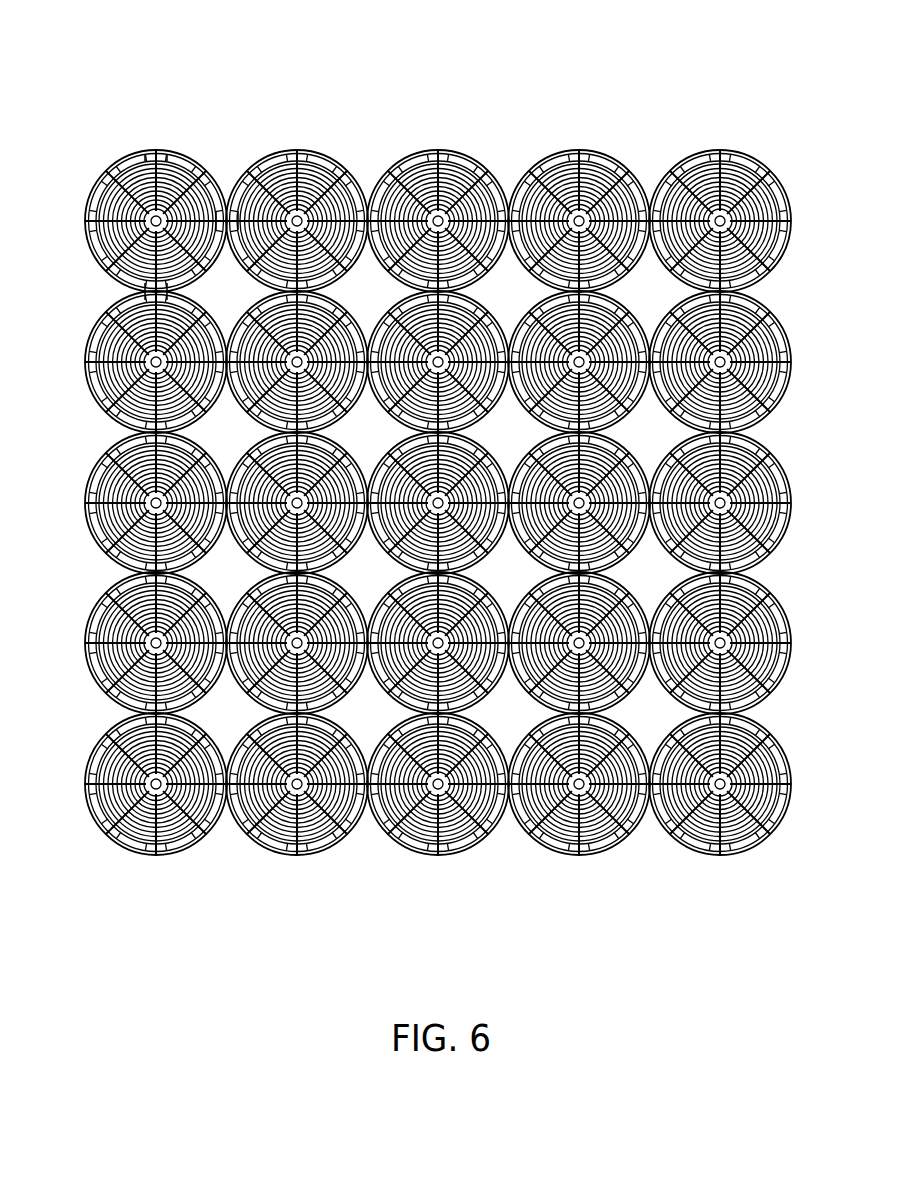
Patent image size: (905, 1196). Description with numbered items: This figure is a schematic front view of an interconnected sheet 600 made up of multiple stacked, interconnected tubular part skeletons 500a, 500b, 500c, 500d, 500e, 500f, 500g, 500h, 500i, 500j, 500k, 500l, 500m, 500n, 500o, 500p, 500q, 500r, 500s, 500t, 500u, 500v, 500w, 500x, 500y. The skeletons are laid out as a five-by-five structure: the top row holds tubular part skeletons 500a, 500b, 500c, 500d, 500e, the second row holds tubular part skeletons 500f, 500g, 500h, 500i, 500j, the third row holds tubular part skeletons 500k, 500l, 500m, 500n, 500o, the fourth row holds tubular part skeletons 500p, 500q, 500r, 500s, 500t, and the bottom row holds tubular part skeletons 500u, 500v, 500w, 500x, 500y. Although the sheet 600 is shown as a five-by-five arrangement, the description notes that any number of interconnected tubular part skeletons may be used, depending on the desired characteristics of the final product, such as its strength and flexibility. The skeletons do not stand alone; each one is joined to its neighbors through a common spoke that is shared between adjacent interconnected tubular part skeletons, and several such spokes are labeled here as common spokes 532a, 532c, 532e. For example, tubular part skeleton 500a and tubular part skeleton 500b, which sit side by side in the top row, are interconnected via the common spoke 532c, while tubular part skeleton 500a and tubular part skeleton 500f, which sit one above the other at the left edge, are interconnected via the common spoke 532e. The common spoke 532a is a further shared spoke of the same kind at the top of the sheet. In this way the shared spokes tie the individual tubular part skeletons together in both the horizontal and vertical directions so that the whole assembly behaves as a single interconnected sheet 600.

The interconnected sheet 600 is at (118, 58).
The tubular part skeleton 500a is at (108, 147).
The tubular part skeleton 500b is at (290, 142).
The tubular part skeleton 500c is at (385, 145).
The tubular part skeleton 500d is at (525, 145).
The tubular part skeleton 500e is at (666, 145).
The tubular part skeleton 500f is at (105, 295).
The tubular part skeleton 500g is at (246, 295).
The tubular part skeleton 500h is at (386, 295).
The tubular part skeleton 500i is at (526, 295).
The tubular part skeleton 500j is at (752, 298).
The tubular part skeleton 500k is at (105, 435).
The tubular part skeleton 500l is at (246, 435).
The tubular part skeleton 500m is at (386, 435).
The tubular part skeleton 500n is at (526, 435).
The tubular part skeleton 500o is at (752, 438).
The tubular part skeleton 500p is at (105, 575).
The tubular part skeleton 500q is at (246, 575).
The tubular part skeleton 500r is at (386, 575).
The tubular part skeleton 500s is at (526, 575).
The tubular part skeleton 500t is at (752, 578).
The tubular part skeleton 500u is at (105, 715).
The tubular part skeleton 500v is at (262, 843).
The tubular part skeleton 500w is at (403, 843).
The tubular part skeleton 500x is at (543, 843).
The tubular part skeleton 500y is at (752, 718).
The common spoke 532a is at (145, 142).
The common spoke 532c is at (219, 200).
The common spoke 532e is at (108, 282).